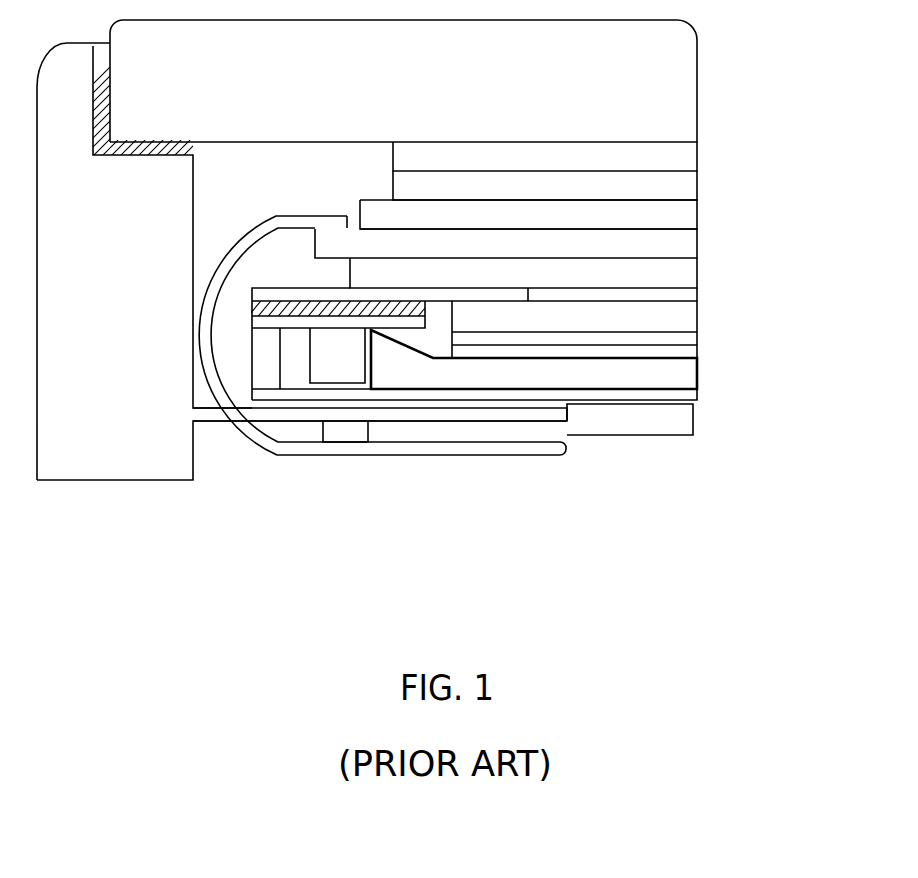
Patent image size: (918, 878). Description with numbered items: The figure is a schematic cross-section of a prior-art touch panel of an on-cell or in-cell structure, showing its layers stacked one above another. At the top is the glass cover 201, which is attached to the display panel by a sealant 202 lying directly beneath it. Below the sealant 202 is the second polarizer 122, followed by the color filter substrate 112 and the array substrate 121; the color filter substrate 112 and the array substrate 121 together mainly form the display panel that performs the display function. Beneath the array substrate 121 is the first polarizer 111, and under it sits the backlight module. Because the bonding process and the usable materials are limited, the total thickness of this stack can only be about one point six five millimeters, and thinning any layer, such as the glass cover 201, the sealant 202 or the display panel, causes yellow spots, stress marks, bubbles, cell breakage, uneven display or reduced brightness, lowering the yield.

The glass cover 201 is at (698, 91).
The sealant 202 is at (698, 153).
The second polarizer 122 is at (698, 183).
The color filter substrate 112 is at (698, 213).
The array substrate 121 is at (698, 241).
The first polarizer 111 is at (698, 271).